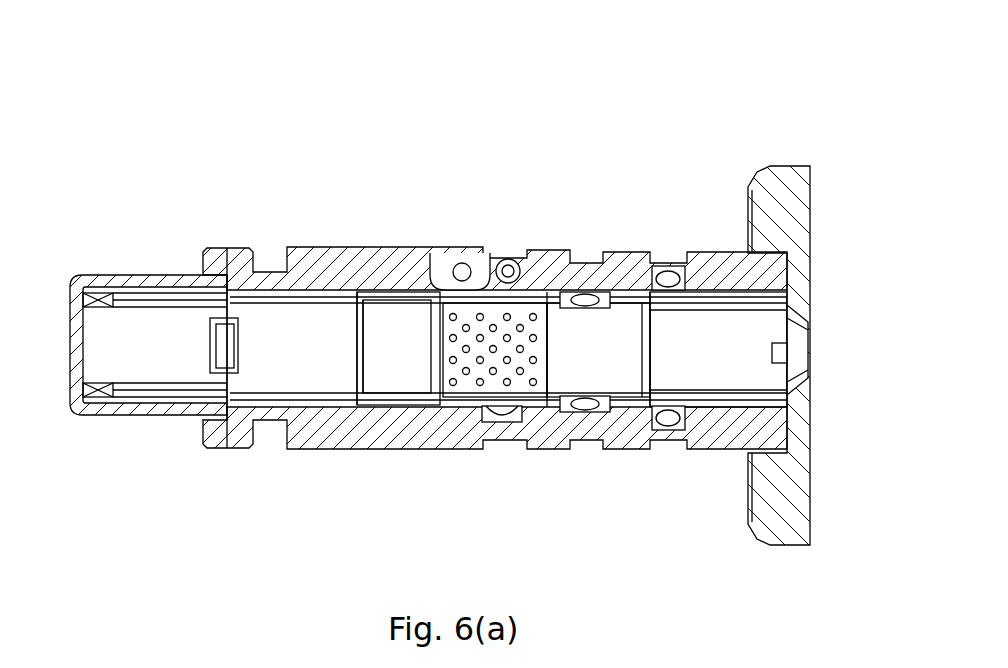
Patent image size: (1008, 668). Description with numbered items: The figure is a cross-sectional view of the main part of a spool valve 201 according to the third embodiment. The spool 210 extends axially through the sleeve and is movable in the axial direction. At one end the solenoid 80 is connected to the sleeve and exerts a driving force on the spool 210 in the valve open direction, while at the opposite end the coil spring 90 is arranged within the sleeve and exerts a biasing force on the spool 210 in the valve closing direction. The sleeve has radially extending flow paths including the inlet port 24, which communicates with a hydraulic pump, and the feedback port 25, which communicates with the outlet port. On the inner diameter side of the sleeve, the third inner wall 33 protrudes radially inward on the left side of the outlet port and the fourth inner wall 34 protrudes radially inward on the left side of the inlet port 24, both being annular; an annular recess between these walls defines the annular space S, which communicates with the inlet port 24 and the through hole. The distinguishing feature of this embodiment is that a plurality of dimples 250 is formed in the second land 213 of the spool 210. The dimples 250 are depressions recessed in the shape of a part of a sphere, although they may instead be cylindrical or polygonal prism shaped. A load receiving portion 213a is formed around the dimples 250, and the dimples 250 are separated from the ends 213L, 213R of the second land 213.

The spool valve 201 is at (428, 280).
The solenoid 80 is at (799, 150).
The coil spring 90 is at (112, 276).
The feedback port 25 is at (405, 250).
The inlet port 24 is at (500, 252).
The load receiving portion 213a is at (466, 252).
The annular space S is at (527, 252).
The second land 213 is at (551, 252).
The spool 210 is at (680, 252).
The end of second land 213L is at (433, 333).
The end of second land 213R is at (607, 447).
The dimples 250 is at (497, 412).
The fourth inner wall 34 is at (463, 416).
The third inner wall 33 is at (573, 415).